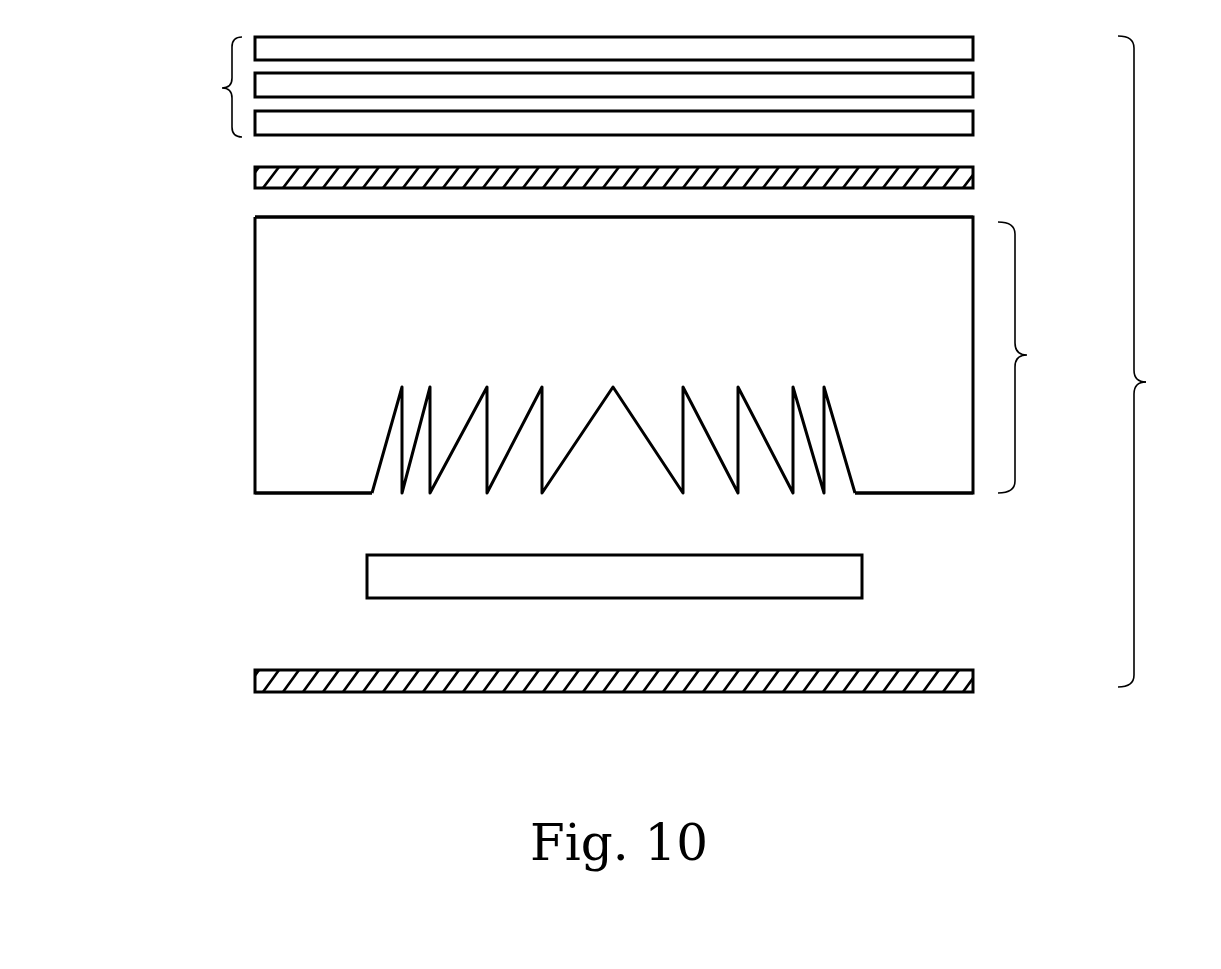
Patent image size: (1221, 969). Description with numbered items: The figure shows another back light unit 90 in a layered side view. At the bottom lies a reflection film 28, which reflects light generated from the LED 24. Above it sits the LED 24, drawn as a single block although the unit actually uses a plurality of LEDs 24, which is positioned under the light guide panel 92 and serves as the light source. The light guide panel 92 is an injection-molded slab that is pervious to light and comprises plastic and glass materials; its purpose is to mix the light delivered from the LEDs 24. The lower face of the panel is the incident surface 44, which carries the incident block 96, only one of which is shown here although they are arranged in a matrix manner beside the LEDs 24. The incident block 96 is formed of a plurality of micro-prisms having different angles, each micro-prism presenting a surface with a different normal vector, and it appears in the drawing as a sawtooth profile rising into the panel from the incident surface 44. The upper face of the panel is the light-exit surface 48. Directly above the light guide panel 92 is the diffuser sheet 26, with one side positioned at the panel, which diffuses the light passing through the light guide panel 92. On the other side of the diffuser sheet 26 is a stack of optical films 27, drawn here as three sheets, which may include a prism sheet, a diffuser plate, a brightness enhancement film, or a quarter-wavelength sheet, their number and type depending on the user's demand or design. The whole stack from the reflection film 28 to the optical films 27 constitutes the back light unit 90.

The optical films 27 is at (222, 88).
The diffuser sheet 26 is at (976, 177).
The light-exit surface 48 is at (950, 217).
The light guide panel 92 is at (1027, 355).
The incident block 96 is at (843, 441).
The incident surface 44 is at (950, 495).
The LED 24 is at (865, 578).
The reflection film 28 is at (976, 681).
The back light unit 90 is at (1146, 382).